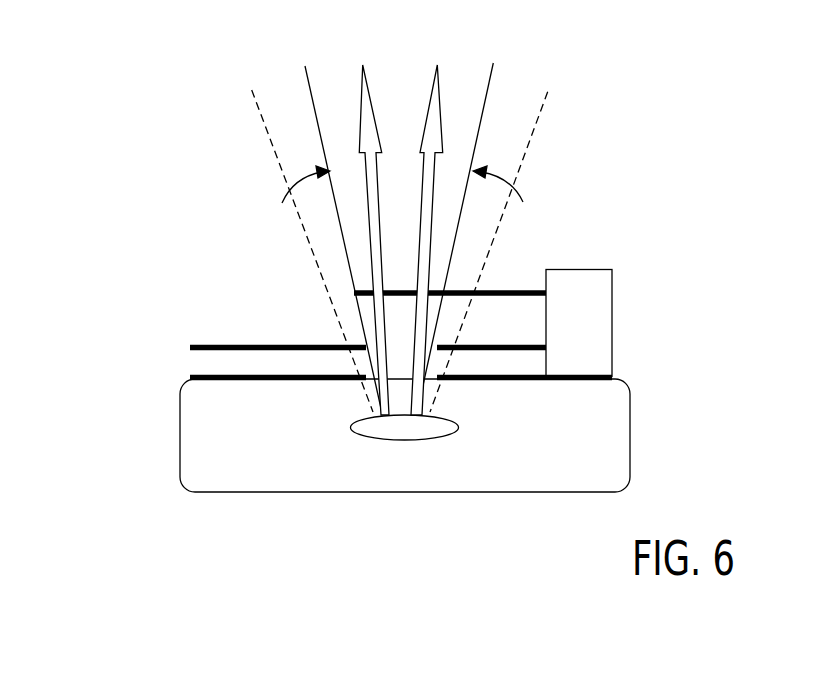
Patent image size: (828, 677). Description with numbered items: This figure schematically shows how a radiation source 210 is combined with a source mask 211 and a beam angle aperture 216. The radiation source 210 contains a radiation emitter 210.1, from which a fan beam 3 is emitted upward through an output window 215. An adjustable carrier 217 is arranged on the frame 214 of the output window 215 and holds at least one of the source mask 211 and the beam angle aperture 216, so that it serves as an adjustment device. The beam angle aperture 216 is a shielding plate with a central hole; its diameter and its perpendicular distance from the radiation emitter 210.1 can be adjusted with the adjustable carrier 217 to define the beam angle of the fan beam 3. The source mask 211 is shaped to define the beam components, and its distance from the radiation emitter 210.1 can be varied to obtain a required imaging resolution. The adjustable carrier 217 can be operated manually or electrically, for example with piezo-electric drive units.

The fan beam 3 is at (480, 137).
The radiation source 210 is at (180, 452).
The radiation emitter 210.1 is at (403, 430).
The source mask 211 is at (512, 291).
The frame 214 is at (528, 383).
The output window 215 is at (372, 393).
The beam angle aperture 216 is at (310, 346).
The adjustable carrier 217 is at (600, 340).